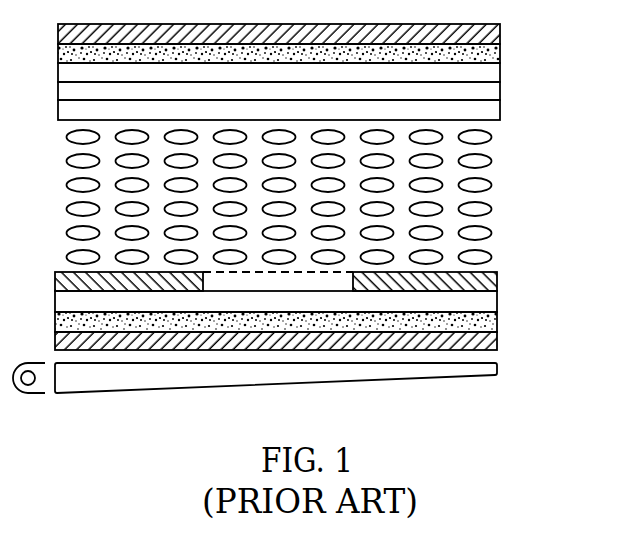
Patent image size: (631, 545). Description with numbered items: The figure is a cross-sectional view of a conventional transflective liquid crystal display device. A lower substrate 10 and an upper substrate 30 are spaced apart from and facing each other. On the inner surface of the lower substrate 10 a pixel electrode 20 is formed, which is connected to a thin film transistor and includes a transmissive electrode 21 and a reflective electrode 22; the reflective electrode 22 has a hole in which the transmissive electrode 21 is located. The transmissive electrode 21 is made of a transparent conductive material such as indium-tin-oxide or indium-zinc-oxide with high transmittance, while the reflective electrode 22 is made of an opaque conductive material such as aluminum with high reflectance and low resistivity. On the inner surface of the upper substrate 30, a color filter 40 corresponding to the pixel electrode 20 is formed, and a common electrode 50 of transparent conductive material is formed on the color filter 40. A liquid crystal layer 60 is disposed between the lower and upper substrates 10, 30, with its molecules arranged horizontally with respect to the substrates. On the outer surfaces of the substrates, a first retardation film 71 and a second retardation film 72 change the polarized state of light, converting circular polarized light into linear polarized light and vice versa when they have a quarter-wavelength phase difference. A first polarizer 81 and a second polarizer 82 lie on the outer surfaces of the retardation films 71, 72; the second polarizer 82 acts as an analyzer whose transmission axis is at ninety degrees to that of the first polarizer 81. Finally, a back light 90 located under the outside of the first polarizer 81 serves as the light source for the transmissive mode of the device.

The lower substrate 10 is at (497, 301).
The pixel electrode 20 is at (334, 265).
The transmissive electrode 21 is at (337, 282).
The reflective electrode 22 is at (497, 286).
The upper substrate 30 is at (500, 81).
The color filter 40 is at (500, 100).
The common electrode 50 is at (500, 120).
The liquid crystal layer 60 is at (486, 172).
The first retardation film 71 is at (497, 326).
The second retardation film 72 is at (500, 54).
The first polarizer 81 is at (497, 349).
The second polarizer 82 is at (500, 35).
The back light 90 is at (500, 364).